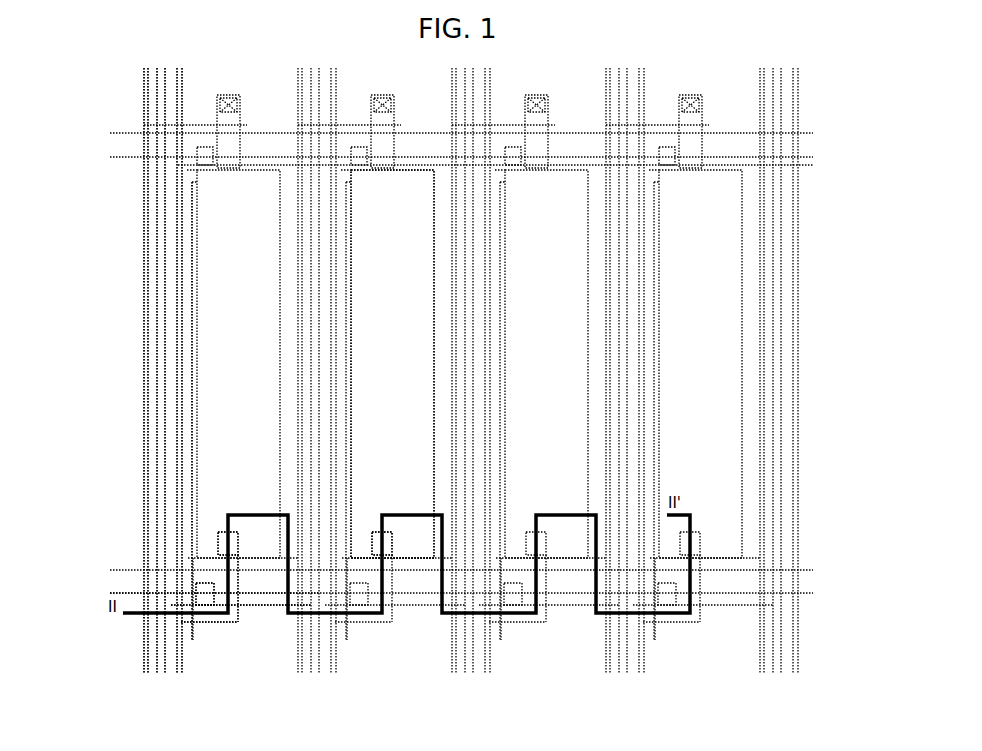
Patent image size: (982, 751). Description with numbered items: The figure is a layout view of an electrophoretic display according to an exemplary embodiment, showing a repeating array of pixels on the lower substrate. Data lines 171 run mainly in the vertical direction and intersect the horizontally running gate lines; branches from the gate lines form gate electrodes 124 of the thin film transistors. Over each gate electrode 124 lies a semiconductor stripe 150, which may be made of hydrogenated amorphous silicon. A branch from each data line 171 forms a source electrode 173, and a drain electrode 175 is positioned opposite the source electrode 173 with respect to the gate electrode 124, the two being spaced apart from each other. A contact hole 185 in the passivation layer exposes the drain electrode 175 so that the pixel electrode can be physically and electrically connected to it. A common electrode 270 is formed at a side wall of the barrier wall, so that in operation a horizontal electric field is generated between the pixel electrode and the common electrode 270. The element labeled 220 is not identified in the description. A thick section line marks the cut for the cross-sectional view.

The data line 171 is at (158, 248).
The light blocking member 220 is at (190, 325).
The common electrode 270 is at (440, 256).
The contact hole 185 is at (224, 545).
The drain electrode 175 is at (376, 542).
The semiconductor stripe 150 is at (205, 618).
The source electrode 173 is at (227, 620).
The gate electrode 124 is at (260, 600).